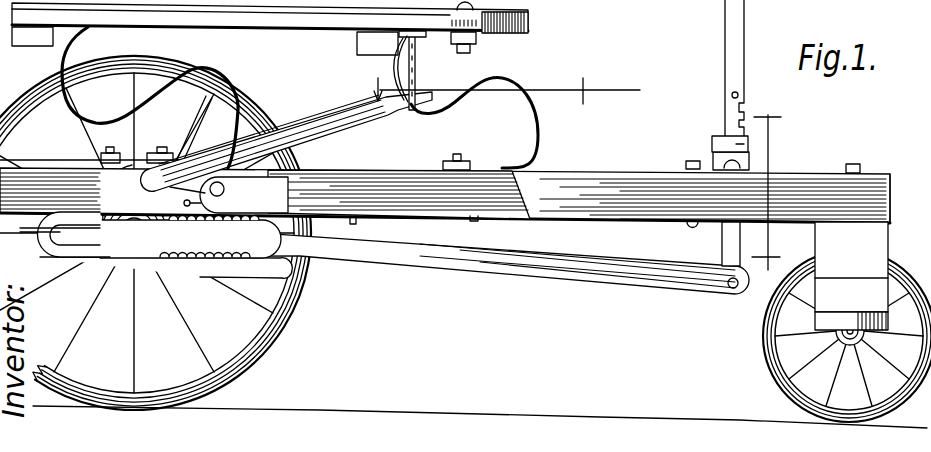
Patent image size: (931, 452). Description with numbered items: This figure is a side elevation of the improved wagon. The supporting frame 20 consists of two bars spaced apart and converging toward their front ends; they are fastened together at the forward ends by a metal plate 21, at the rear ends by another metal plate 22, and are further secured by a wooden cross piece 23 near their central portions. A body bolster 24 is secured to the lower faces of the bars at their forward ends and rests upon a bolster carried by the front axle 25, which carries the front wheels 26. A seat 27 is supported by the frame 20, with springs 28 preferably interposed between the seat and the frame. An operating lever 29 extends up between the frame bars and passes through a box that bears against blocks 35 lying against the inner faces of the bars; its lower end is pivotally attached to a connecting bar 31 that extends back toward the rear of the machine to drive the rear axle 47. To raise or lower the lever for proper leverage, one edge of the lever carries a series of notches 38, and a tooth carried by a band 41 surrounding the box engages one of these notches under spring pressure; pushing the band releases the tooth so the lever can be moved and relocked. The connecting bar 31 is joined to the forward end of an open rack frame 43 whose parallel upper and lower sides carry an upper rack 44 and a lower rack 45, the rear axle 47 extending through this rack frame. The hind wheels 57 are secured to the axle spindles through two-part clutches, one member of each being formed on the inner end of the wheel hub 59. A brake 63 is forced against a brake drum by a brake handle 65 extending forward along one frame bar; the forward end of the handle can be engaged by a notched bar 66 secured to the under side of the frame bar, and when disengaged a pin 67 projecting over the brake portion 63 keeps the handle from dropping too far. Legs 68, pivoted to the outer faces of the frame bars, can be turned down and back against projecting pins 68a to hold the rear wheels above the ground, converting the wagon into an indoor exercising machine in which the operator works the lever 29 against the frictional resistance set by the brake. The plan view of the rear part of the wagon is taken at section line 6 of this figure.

The section line 6 is at (495, 91).
The supporting frame 20 is at (566, 176).
The metal plate 21 is at (798, 173).
The metal plate 22 is at (194, 130).
The wooden cross piece 23 is at (401, 182).
The body bolster 24 is at (820, 249).
The front axle 25 is at (835, 352).
The front wheels 26 is at (777, 330).
The seat 27 is at (744, 133).
The springs 28 is at (76, 37).
The operating lever 29 is at (558, 1).
The connecting bar 31 is at (600, 262).
The blocks 35 is at (540, 16).
The notches 38 is at (745, 110).
The band 41 is at (718, 136).
The open frame 43 is at (166, 278).
The upper rack 44 is at (233, 221).
The lower rack 45 is at (204, 255).
The rear axle 47 is at (128, 242).
The hind wheels 57 is at (248, 334).
The wheel hub 59 is at (68, 267).
The brake 63 is at (114, 165).
The brake handle 65 is at (330, 110).
The notched bar 66 is at (417, 66).
The pin 67 is at (108, 190).
The legs 68 is at (366, 176).
The projecting pins 68a is at (240, 195).